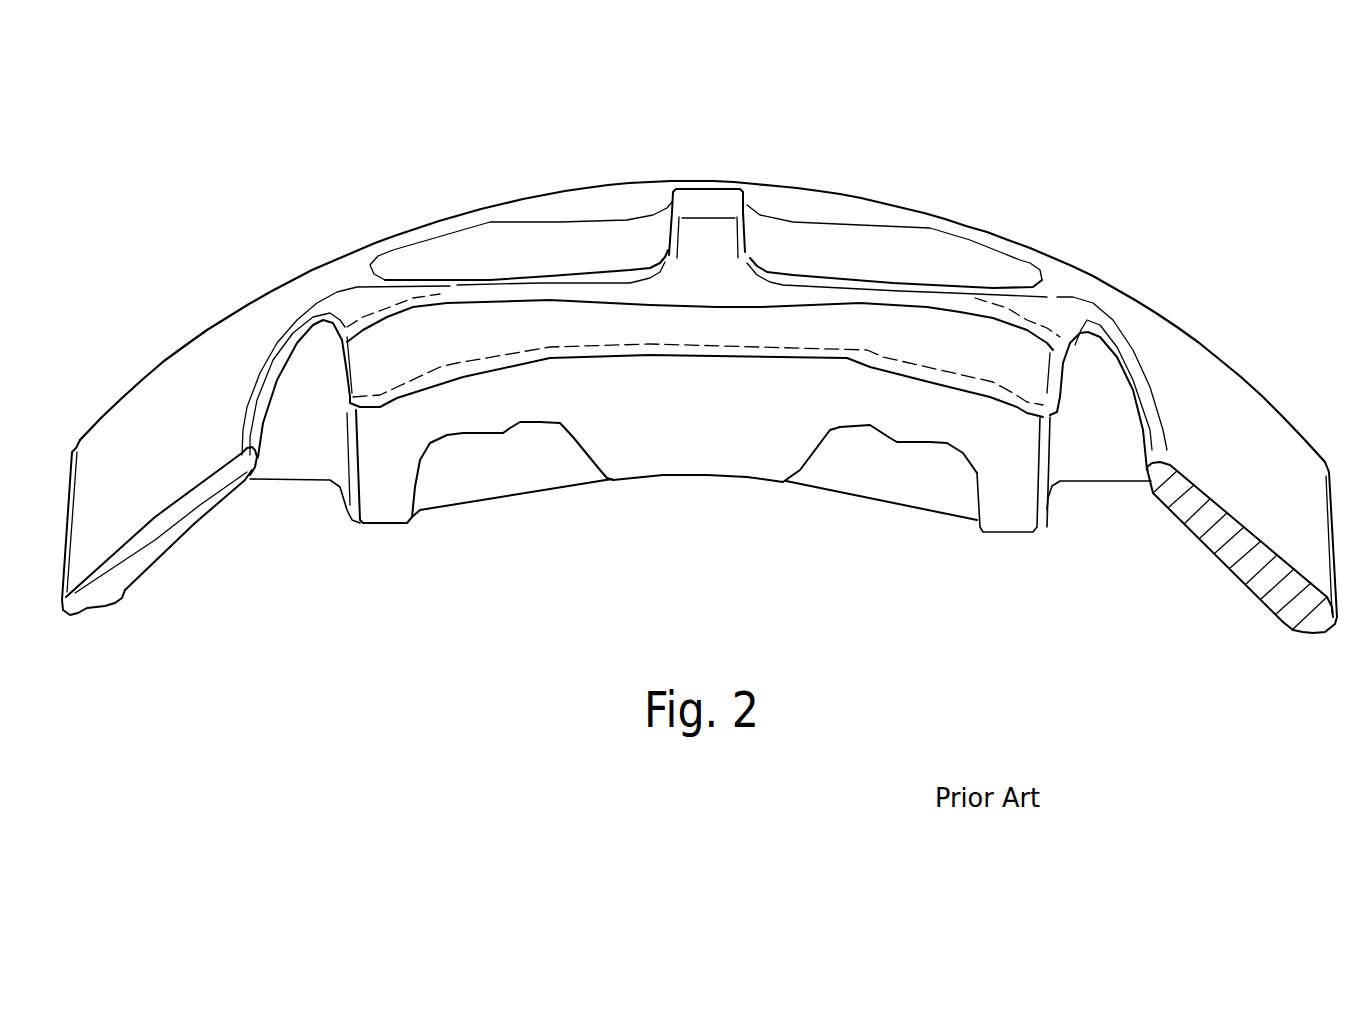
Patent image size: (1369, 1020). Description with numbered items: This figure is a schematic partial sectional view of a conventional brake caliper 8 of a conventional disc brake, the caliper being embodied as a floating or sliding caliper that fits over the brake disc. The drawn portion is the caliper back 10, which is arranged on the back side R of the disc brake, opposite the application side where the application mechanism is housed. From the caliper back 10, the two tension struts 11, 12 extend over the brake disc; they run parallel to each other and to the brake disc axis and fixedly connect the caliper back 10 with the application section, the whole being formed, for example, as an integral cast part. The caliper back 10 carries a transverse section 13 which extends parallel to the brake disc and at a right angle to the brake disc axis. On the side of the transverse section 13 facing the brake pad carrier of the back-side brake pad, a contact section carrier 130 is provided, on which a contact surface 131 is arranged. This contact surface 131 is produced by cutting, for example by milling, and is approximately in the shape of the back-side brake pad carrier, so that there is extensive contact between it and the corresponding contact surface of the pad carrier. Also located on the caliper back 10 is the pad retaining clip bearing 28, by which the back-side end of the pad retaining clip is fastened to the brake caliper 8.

The brake caliper 8 is at (1163, 312).
The caliper back 10 is at (1111, 291).
The tension strut 11 is at (122, 570).
The tension strut 12 is at (1267, 563).
The transverse section 13 is at (790, 255).
The pad retaining clip bearing 28 is at (697, 207).
The contact section carrier 130 is at (574, 272).
The contact surface 131 is at (700, 482).
The back side R is at (1250, 333).